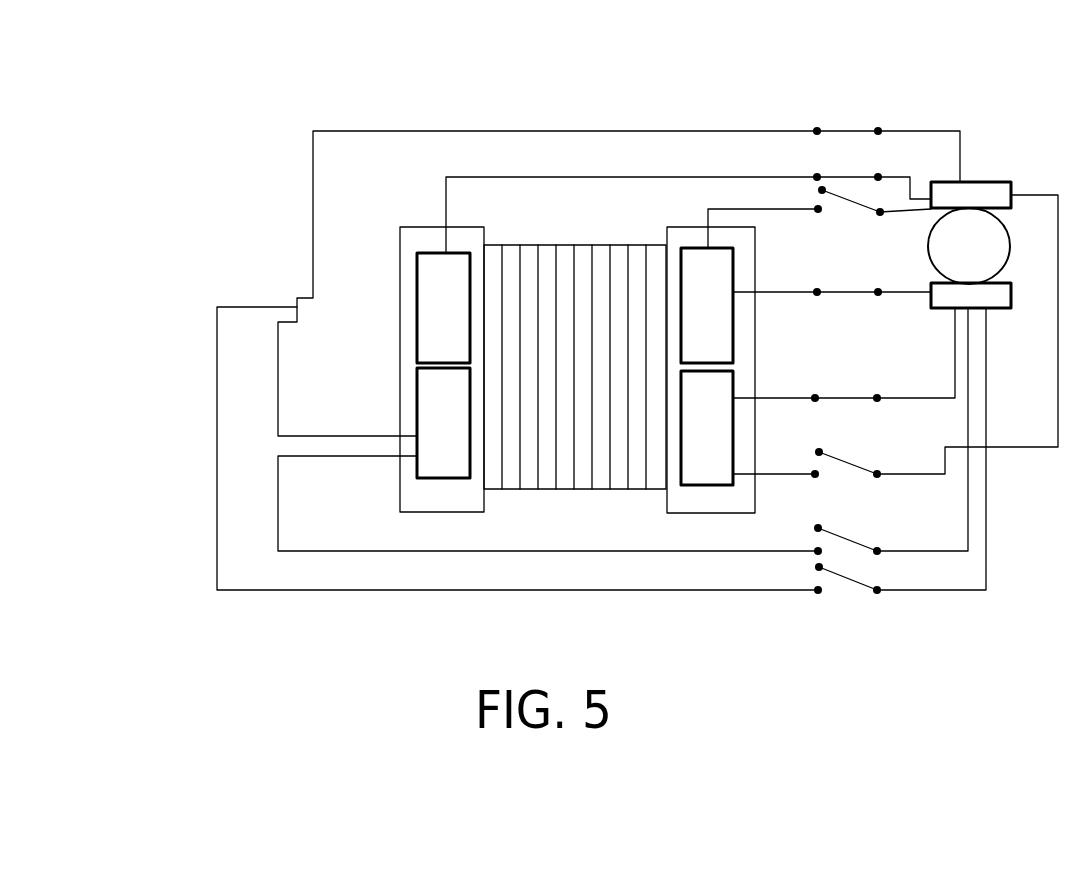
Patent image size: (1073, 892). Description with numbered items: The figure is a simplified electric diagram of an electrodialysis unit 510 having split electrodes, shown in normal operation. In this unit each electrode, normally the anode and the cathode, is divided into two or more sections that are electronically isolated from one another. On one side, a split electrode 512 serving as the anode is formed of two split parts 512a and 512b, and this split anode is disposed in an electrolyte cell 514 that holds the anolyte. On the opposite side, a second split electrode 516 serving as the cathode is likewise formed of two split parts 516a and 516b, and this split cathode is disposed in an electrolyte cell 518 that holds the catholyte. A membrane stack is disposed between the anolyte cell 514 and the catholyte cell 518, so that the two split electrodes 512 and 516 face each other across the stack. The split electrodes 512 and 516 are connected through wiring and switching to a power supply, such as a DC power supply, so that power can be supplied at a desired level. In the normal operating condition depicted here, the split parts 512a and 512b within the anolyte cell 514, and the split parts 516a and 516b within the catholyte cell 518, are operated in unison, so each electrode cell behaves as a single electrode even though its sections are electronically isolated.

The electrodialysis unit 510 is at (246, 230).
The split electrode (anode) 512 is at (433, 248).
The split part of anode 512a is at (415, 285).
The split part of anode 512b is at (417, 390).
The electrolyte (anolyte) cell 514 is at (417, 497).
The split electrode (cathode) 516 is at (705, 248).
The split part of cathode 516a is at (733, 267).
The split part of cathode 516b is at (733, 380).
The electrolyte (catholyte) cell 518 is at (743, 308).